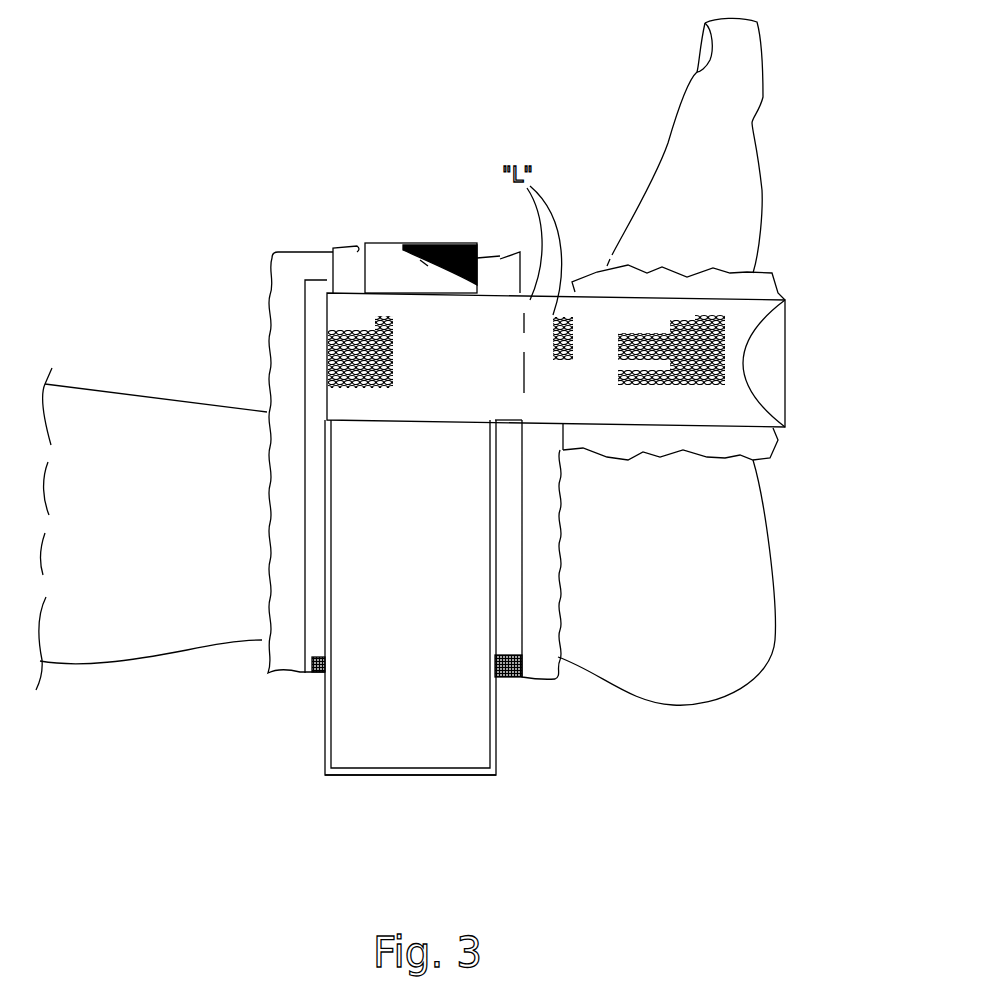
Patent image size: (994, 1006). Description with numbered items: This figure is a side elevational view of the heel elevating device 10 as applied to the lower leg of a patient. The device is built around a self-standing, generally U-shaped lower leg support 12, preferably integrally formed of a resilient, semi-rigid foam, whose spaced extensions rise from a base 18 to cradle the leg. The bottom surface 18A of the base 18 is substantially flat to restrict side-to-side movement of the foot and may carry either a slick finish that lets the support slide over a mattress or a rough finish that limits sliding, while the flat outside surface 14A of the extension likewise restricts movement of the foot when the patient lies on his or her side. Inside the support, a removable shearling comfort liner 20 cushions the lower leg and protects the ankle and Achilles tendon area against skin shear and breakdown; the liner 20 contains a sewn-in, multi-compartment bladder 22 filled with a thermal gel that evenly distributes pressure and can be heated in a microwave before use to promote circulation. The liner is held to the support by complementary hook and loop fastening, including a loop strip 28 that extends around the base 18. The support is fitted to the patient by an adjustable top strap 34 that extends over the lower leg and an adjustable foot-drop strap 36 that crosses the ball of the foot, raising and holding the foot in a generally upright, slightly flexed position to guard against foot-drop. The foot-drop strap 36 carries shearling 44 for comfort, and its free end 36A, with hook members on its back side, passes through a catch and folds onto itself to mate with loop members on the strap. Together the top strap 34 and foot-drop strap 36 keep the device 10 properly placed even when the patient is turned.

The heel elevating device 10 is at (240, 222).
The lower leg support 12 is at (368, 793).
The outside surface 14A is at (352, 553).
The base 18 is at (473, 727).
The bottom surface 18A is at (450, 777).
The comfort liner 20 is at (550, 622).
The bladder 22 is at (512, 543).
The loop strip 28 is at (343, 358).
The top strap 34 is at (428, 243).
The foot-drop strap 36 is at (627, 407).
The free end 36A is at (778, 367).
The shearling 44 is at (718, 287).